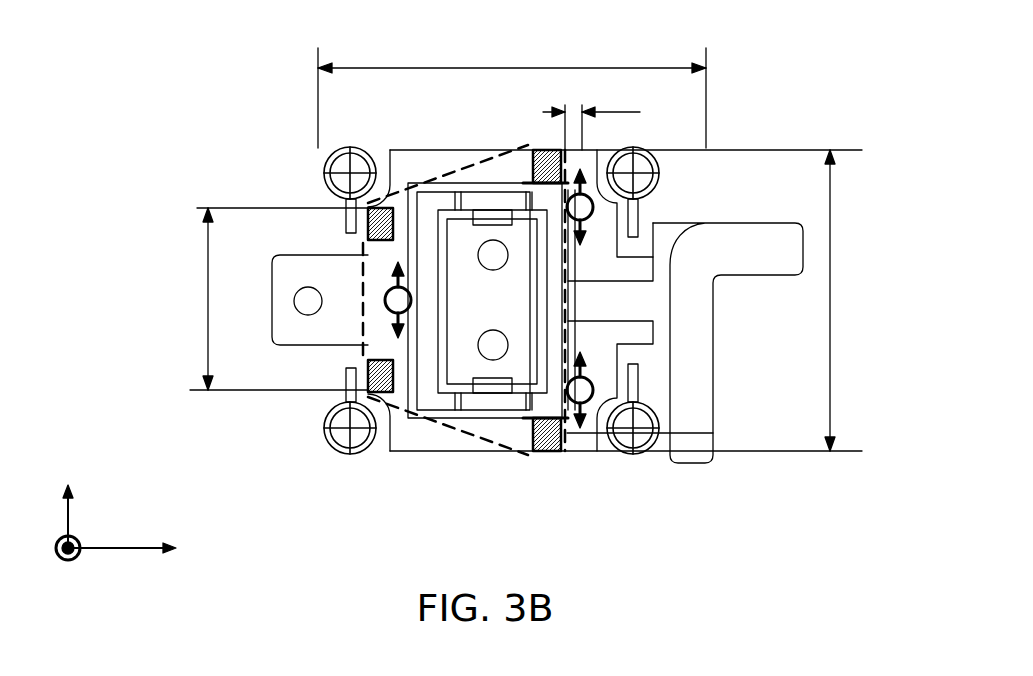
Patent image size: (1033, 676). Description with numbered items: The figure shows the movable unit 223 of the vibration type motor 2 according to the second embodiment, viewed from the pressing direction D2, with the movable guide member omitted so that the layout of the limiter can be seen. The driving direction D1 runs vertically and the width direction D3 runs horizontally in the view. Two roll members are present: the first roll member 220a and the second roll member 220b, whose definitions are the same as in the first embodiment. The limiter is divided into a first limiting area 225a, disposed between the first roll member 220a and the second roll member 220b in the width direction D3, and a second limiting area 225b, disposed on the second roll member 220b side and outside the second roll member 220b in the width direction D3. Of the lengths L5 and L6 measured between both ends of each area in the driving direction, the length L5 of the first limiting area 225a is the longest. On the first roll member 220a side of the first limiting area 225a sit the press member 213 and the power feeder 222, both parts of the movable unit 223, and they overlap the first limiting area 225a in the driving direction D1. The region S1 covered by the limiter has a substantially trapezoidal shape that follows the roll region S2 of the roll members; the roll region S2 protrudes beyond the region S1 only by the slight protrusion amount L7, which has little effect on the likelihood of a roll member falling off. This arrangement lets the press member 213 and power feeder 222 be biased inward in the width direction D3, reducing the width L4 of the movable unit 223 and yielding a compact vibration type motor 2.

The vibration type motor 2 is at (839, 43).
The press member 213 is at (390, 150).
The movable unit 223 is at (222, 150).
The first limiting area 225a is at (547, 440).
The second limiting area 225b is at (370, 372).
The first roll member 220a is at (590, 218).
The second roll member 220b is at (385, 300).
The power feeder 222 is at (687, 245).
The region covered with the limiter S1 is at (457, 167).
The roll region S2 is at (408, 323).
The width of the movable unit L4 is at (512, 91).
The length of the first limiting area L5 is at (850, 300).
The length of the second limiting area L6 is at (270, 299).
The protrusion amount L7 is at (594, 116).
The driving direction D1 is at (44, 516).
The pressing direction D2 is at (47, 548).
The width direction D3 is at (129, 530).